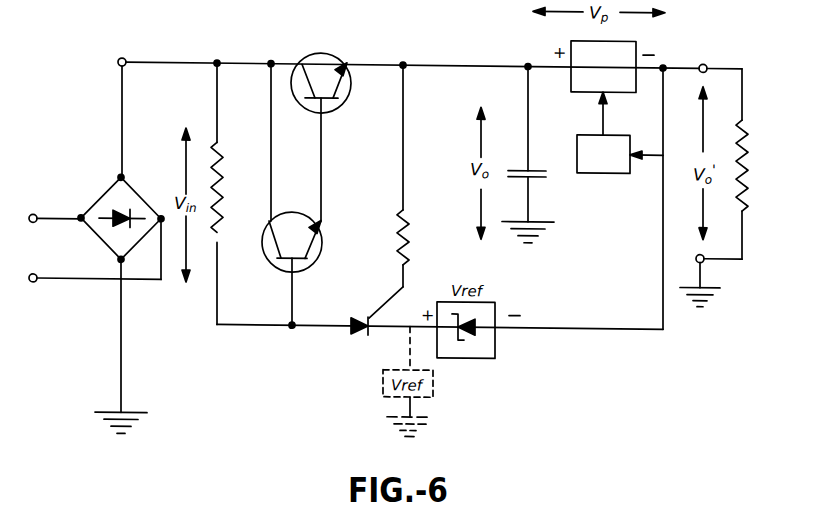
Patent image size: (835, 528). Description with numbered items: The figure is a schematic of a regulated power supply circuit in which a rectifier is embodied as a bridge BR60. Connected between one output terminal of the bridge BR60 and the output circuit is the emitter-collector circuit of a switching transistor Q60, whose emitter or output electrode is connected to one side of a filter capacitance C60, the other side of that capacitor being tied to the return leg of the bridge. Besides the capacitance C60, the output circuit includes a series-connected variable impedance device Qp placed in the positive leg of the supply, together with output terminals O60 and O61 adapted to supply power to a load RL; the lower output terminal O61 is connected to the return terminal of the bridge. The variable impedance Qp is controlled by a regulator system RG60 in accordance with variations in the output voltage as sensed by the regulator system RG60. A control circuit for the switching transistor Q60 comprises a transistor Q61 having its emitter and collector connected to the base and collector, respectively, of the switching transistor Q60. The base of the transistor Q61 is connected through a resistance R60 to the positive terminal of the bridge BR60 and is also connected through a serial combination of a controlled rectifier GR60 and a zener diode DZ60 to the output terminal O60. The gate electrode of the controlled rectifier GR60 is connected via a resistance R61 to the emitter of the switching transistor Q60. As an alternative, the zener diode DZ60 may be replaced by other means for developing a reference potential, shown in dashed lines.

The bridge rectifier BR60 is at (109, 218).
The resistance R60 is at (231, 192).
The resistance R61 is at (403, 190).
The switching transistor Q60 is at (321, 133).
The transistor Q61 is at (309, 269).
The controlled rectifier GR60 is at (350, 341).
The zener diode DZ60 is at (478, 333).
The filter capacitance C60 is at (532, 153).
The variable impedance device Qp is at (603, 67).
The regulator system RG60 is at (620, 133).
The output terminal O60 is at (702, 57).
The output terminal O61 is at (705, 256).
The load RL is at (752, 165).